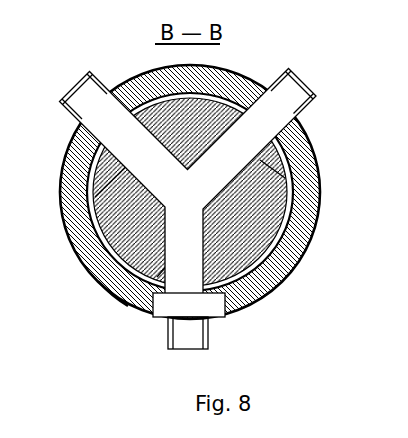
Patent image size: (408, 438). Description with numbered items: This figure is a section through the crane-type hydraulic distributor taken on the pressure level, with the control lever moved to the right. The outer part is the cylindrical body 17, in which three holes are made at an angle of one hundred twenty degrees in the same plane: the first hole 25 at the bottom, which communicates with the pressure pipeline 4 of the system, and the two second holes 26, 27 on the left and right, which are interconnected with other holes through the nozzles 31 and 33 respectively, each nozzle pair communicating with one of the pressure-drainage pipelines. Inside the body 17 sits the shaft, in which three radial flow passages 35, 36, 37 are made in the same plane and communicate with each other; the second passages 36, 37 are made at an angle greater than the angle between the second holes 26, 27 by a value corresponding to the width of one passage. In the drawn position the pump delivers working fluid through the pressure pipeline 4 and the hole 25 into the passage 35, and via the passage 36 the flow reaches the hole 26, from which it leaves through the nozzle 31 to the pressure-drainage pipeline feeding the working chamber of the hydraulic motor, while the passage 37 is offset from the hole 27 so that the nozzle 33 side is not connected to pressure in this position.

The nozzle 31 is at (78, 100).
The nozzle 33 is at (299, 97).
The second hole 26 is at (59, 170).
The second hole 27 is at (318, 168).
The second radial flow passage 37 is at (317, 219).
The cylindrical body 17 is at (97, 281).
The second radial flow passage 36 is at (95, 197).
The first radial flow passage 35 is at (128, 306).
The pressure pipeline 4 is at (172, 324).
The first hole 25 is at (217, 311).